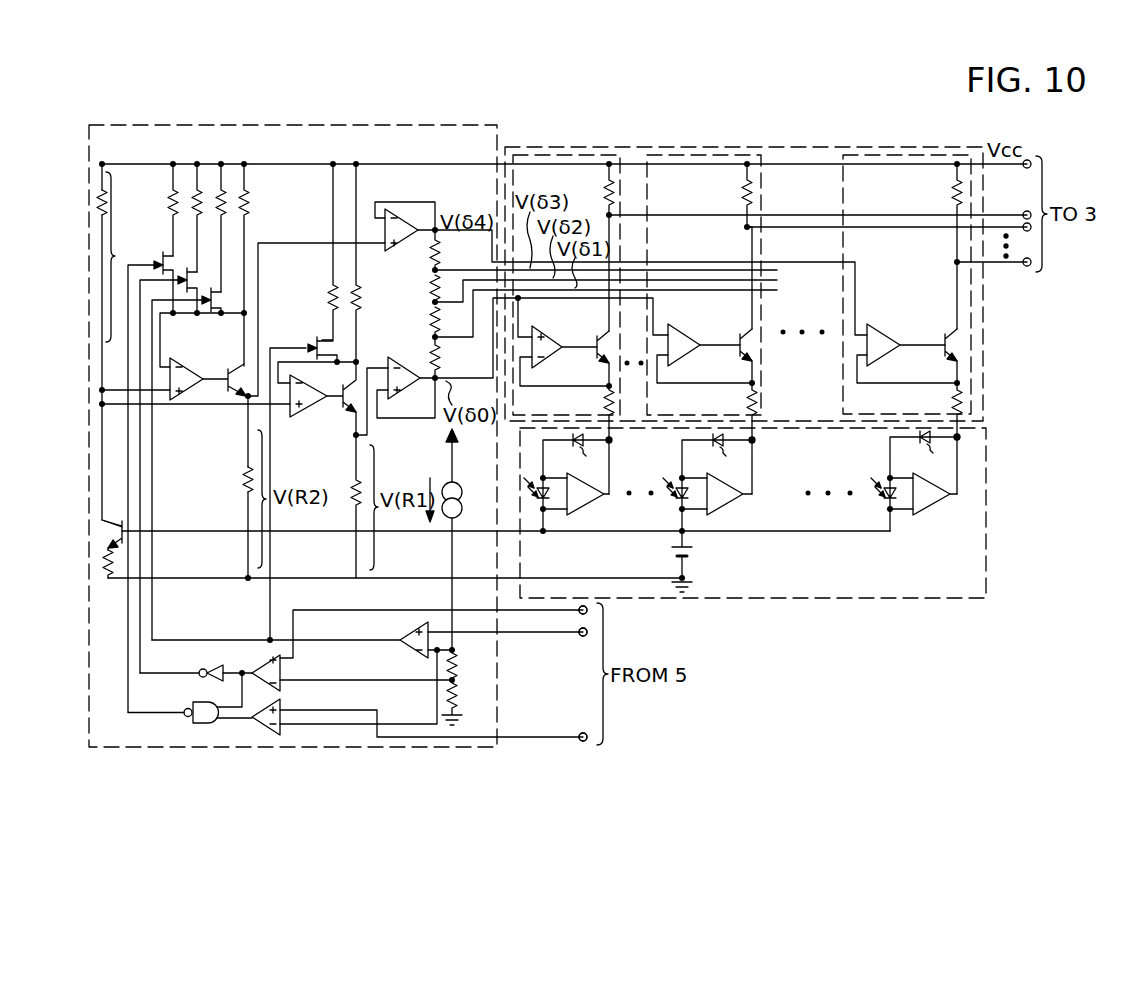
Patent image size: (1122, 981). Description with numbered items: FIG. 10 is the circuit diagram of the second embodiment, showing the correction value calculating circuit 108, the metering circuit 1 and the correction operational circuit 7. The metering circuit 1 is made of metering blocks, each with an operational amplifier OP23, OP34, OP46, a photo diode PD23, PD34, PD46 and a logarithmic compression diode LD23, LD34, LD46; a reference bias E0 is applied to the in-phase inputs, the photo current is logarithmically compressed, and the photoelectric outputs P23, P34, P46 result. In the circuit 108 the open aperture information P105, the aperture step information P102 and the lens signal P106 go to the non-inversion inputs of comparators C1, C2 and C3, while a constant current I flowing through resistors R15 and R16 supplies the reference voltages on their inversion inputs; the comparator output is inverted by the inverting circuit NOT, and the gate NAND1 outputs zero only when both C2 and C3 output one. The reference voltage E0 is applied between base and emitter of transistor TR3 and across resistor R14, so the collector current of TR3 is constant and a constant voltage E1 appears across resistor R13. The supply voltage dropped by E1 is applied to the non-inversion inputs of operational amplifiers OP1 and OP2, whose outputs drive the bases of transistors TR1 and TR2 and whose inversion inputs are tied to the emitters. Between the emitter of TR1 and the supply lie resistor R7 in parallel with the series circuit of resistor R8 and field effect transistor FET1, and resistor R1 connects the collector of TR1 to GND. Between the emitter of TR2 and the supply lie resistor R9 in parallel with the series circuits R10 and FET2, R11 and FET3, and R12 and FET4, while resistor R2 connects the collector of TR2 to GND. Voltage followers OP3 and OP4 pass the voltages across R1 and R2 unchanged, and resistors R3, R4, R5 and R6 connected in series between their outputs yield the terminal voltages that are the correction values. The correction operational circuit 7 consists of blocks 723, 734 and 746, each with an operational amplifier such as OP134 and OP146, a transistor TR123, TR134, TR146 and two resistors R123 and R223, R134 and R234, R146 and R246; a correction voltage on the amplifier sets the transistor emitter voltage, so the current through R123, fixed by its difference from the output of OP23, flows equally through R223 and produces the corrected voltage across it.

The correction value calculating circuit 108 is at (323, 125).
The block of correction operational circuit 723 is at (553, 153).
The block of correction operational circuit 734 is at (692, 153).
The block of correction operational circuit 746 is at (912, 153).
The correction operational circuit 7 is at (983, 360).
The metering circuit 1 is at (986, 530).
The resistor R13 is at (98, 208).
The constant voltage E1 is at (123, 257).
The resistor R12 is at (171, 198).
The resistor R11 is at (194, 180).
The resistor R10 is at (220, 180).
The resistor R9 is at (252, 202).
The resistor R8 is at (330, 292).
The resistor R7 is at (360, 298).
The field effect transistor FET4 is at (162, 256).
The field effect transistor FET3 is at (194, 296).
The field effect transistor FET2 is at (221, 321).
The field effect transistor FET1 is at (316, 340).
The operational amplifier OP2 is at (176, 400).
The transistor TR2 is at (230, 400).
The operational amplifier OP1 is at (302, 418).
The transistor TR1 is at (345, 402).
The operational amplifier OP3 is at (402, 404).
The operational amplifier OP4 is at (402, 211).
The resistor R6 is at (438, 254).
The resistor R5 is at (433, 280).
The resistor R4 is at (433, 324).
The resistor R3 is at (441, 361).
The resistor R2 is at (245, 484).
The resistor R1 is at (352, 486).
The constant current I is at (440, 539).
The transistor TR3 is at (108, 533).
The resistor R14 is at (96, 575).
The inverting circuit NOT is at (214, 672).
The NAND circuit NAND1 is at (220, 704).
The comparator C2 is at (294, 673).
The comparator C3 is at (294, 711).
The comparator C1 is at (402, 637).
The resistor R15 is at (454, 670).
The resistor R16 is at (456, 706).
The aperture step number information P102 is at (521, 618).
The open aperture information P105 is at (571, 638).
The lens signal P106 is at (538, 736).
The resistor R223 is at (604, 190).
The transistor TR123 is at (600, 360).
The resistor R123 is at (606, 408).
The photoelectric output P23 is at (612, 443).
The logarithmic compression diode LD23 is at (576, 464).
The operational amplifier OP23 is at (584, 518).
The photo diode PD23 is at (536, 514).
The resistor R234 is at (744, 190).
The operational amplifier OP134 is at (691, 332).
The transistor TR134 is at (748, 358).
The resistor R134 is at (748, 408).
The photoelectric output P34 is at (755, 441).
The logarithmic compression diode LD34 is at (717, 464).
The operational amplifier OP34 is at (727, 506).
The photo diode PD34 is at (676, 504).
The reference bias E0 is at (694, 552).
The ground GND is at (699, 584).
The resistor R246 is at (952, 190).
The operational amplifier OP146 is at (891, 324).
The transistor TR146 is at (945, 358).
The resistor R146 is at (946, 407).
The photoelectric output P46 is at (960, 438).
The logarithmic compression diode LD46 is at (923, 462).
The operational amplifier OP46 is at (932, 515).
The photo diode PD46 is at (886, 506).